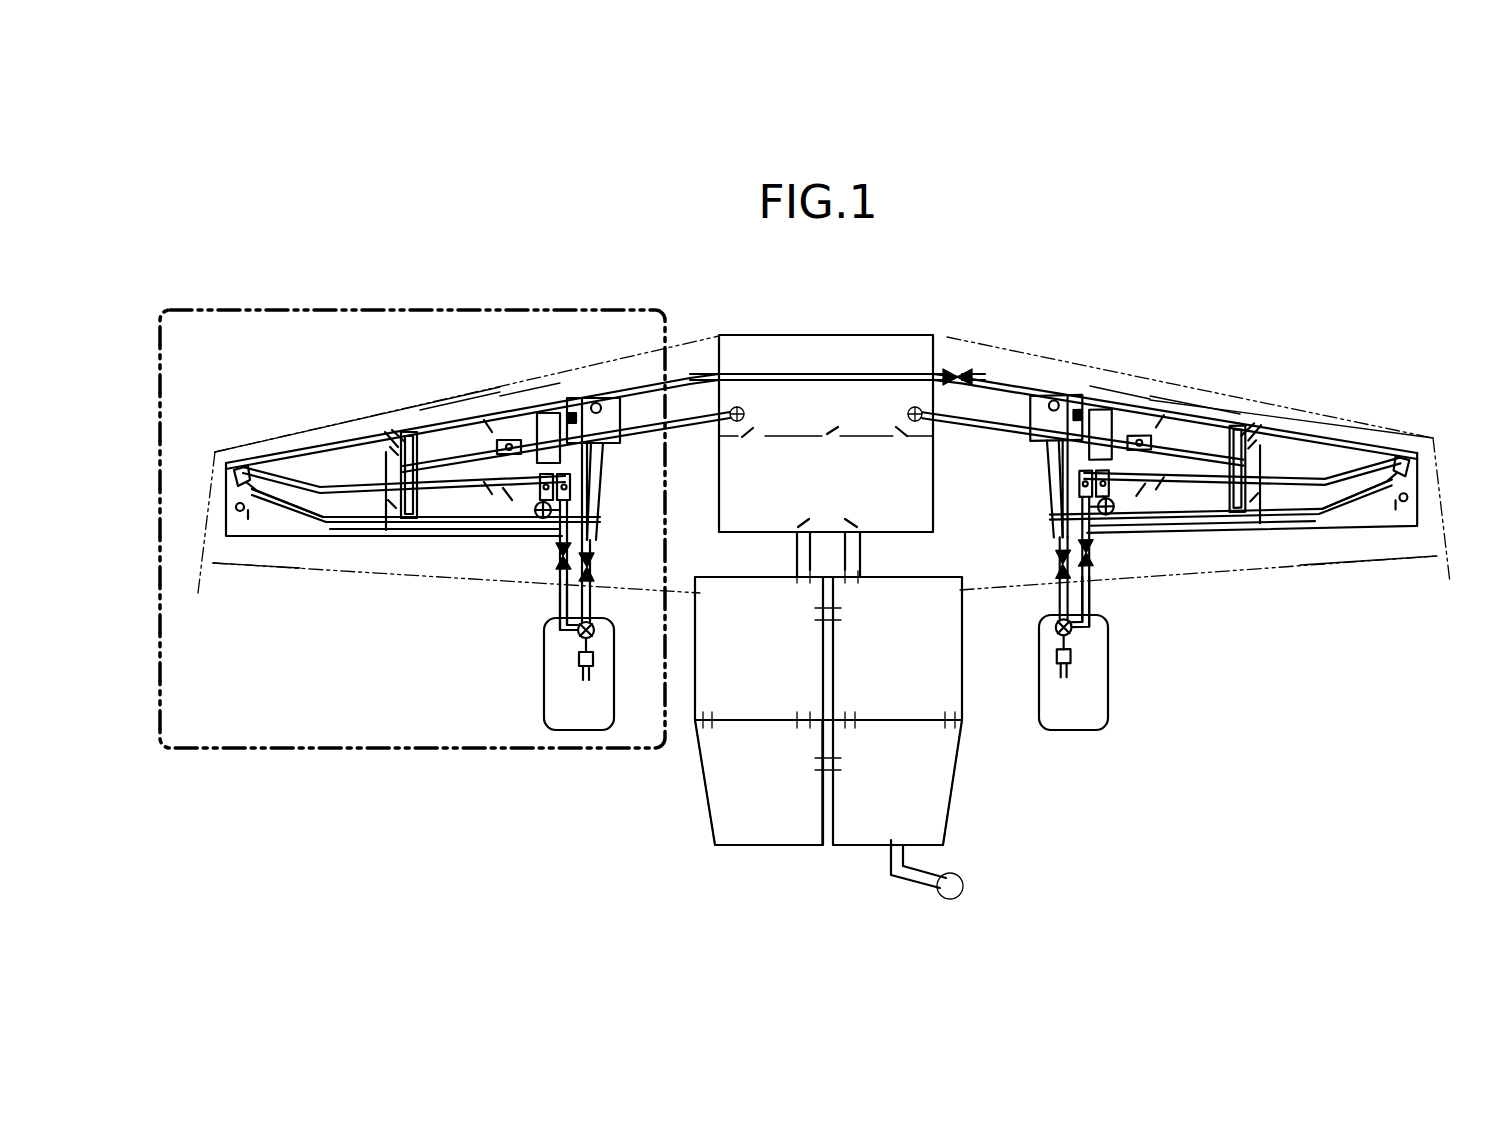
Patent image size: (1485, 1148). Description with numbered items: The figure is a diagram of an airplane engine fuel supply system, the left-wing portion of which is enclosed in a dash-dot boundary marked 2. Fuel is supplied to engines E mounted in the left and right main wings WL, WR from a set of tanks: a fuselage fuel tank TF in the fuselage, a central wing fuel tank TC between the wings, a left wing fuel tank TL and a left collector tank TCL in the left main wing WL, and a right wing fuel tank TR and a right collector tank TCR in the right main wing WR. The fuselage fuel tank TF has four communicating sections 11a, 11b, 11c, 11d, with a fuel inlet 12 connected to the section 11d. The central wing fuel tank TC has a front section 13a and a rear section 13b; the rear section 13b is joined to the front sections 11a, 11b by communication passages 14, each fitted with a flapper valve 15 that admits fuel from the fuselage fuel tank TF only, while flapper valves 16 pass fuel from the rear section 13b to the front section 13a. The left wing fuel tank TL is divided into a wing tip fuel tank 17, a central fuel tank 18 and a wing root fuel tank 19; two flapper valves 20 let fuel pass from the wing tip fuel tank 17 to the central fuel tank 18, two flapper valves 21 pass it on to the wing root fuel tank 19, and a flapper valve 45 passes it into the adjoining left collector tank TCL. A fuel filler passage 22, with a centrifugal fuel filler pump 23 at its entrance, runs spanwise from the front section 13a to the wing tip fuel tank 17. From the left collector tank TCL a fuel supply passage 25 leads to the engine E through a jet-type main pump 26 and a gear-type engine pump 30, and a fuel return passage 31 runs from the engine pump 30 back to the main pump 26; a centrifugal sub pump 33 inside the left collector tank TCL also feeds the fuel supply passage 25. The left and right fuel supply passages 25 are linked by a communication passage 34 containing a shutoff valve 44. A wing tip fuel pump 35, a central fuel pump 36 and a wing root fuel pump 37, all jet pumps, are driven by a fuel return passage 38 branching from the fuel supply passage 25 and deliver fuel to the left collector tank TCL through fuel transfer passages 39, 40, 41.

The aircraft fuel system (left portion) 2 is at (391, 748).
The section of fuselage fuel tank 11a is at (744, 651).
The section of fuselage fuel tank 11b is at (880, 651).
The section of fuselage fuel tank 11c is at (744, 792).
The section of fuselage fuel tank 11d is at (880, 792).
The fuel inlet 12 is at (952, 870).
The front section of central wing fuel tank 13a is at (814, 414).
The rear section of central wing fuel tank 13b is at (814, 504).
The communication passage 14 is at (795, 550).
The flapper valve 15 is at (800, 520).
The flapper valve 16 is at (900, 440).
The wing tip fuel tank 17 is at (281, 462).
The central fuel tank 18 is at (458, 404).
The wing root fuel tank 19 is at (517, 410).
The flapper valve 20 is at (1283, 500).
The flapper valve 21 is at (1170, 488).
The fuel filler passage 22 is at (695, 418).
The fuel filler pump 23 is at (908, 410).
The fuel supply passage 25 is at (577, 397).
The main pump 26 is at (822, 560).
The engine pump 30 is at (597, 633).
The fuel return passage 31 is at (560, 597).
The sub pump 33 is at (535, 520).
The communication passage 34 is at (800, 372).
The wing tip fuel pump 35 is at (243, 468).
The central fuel pump 36 is at (395, 440).
The wing root fuel pump 37 is at (572, 415).
The fuel return passage 38 is at (498, 404).
The fuel transfer passage 39 is at (278, 495).
The fuel transfer passage 40 is at (417, 527).
The fuel transfer passage 41 is at (596, 450).
The shutoff valve 44 is at (962, 368).
The flapper valve 45 is at (520, 495).
The central wing fuel tank TC is at (823, 335).
The left collector tank TCL is at (598, 490).
The right collector tank TCR is at (1057, 493).
The left wing fuel tank TL is at (303, 450).
The right wing fuel tank TR is at (1375, 450).
The fuselage fuel tank TF is at (707, 796).
The left main wing WL is at (302, 570).
The right main wing WR is at (1263, 570).
The engine E is at (545, 657).